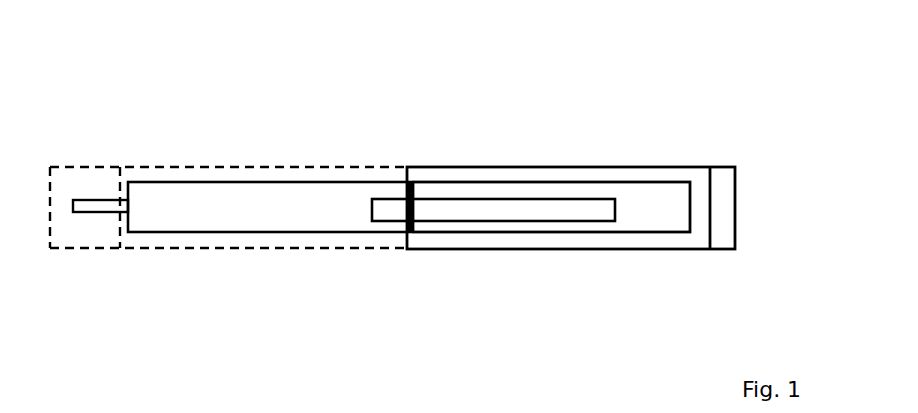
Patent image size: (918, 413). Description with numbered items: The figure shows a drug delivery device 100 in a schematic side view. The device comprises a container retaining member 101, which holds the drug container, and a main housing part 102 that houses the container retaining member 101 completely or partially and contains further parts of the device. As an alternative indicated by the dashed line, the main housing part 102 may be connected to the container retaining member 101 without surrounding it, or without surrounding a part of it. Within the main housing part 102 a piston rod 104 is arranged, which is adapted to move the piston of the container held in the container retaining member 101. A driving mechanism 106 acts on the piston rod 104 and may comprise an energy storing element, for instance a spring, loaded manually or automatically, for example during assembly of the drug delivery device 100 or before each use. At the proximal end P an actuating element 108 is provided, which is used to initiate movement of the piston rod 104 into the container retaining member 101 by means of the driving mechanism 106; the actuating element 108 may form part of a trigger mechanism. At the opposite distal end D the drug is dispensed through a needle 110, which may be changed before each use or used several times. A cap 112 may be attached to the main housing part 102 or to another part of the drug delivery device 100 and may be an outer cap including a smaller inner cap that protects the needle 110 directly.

The drug delivery device 100 is at (531, 99).
The container retaining member 101 is at (287, 233).
The main housing part 102 is at (573, 251).
The piston rod 104 is at (449, 222).
The driving mechanism 106 is at (583, 167).
The actuating element 108 is at (721, 166).
The needle 110 is at (94, 199).
The cap 112 is at (65, 249).
The distal end D is at (107, 257).
The proximal end P is at (726, 271).